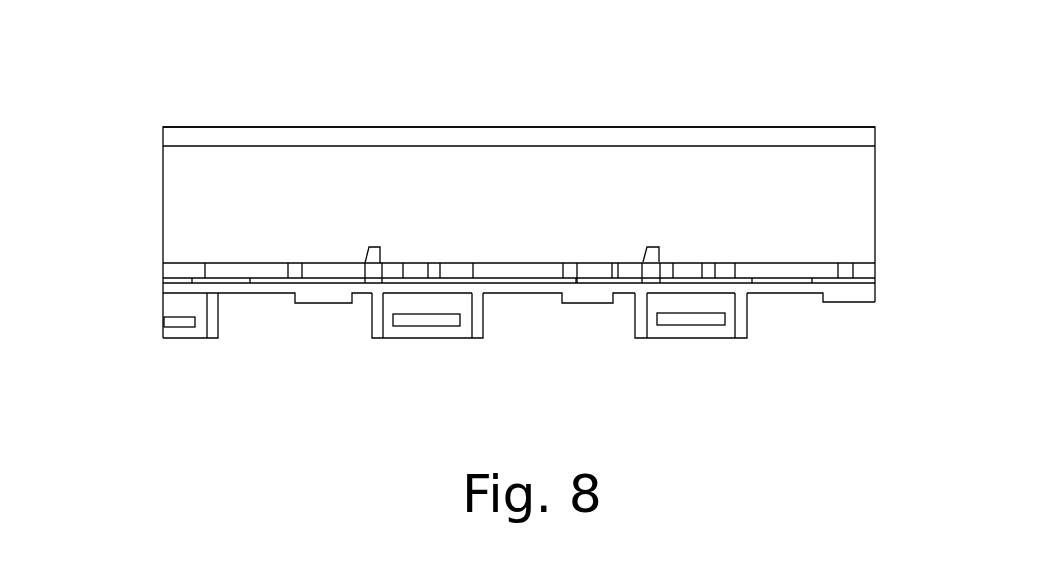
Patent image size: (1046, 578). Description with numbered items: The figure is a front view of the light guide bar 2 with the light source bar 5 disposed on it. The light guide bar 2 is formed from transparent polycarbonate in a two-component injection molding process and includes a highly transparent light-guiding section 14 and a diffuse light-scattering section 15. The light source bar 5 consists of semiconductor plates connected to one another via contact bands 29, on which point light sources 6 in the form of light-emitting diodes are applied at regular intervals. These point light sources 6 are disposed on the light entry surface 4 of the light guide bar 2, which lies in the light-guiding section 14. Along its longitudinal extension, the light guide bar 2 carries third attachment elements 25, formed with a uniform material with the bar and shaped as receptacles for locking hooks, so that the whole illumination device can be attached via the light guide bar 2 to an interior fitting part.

The light guide bar 2 is at (156, 118).
The light entry surface 4 is at (813, 262).
The light source bar 5 is at (267, 284).
The point light sources 6 is at (572, 268).
The light-guiding section 14 is at (190, 197).
The light-scattering section 15 is at (223, 137).
The third attachment elements 25 is at (397, 330).
The contact bands 29 is at (792, 279).